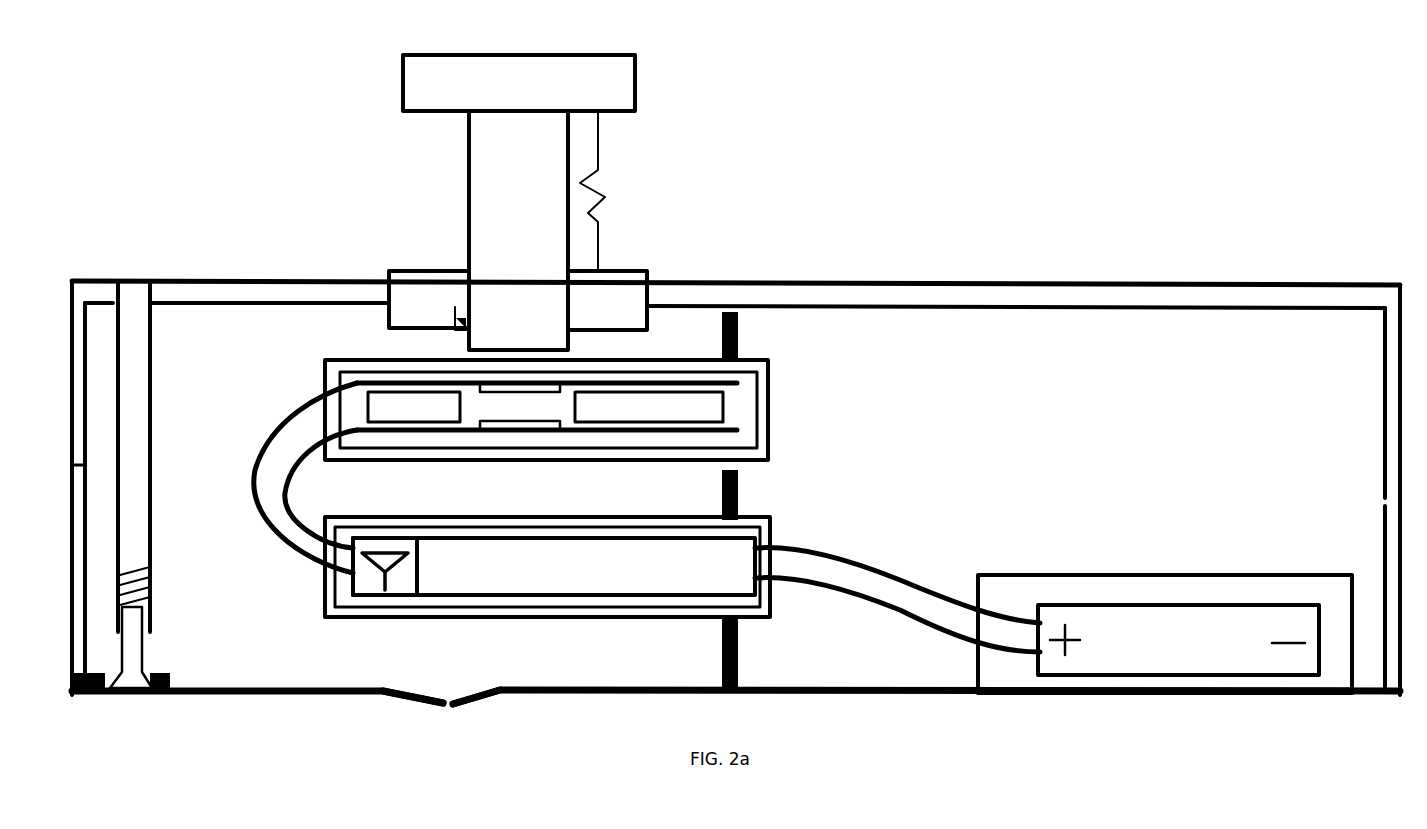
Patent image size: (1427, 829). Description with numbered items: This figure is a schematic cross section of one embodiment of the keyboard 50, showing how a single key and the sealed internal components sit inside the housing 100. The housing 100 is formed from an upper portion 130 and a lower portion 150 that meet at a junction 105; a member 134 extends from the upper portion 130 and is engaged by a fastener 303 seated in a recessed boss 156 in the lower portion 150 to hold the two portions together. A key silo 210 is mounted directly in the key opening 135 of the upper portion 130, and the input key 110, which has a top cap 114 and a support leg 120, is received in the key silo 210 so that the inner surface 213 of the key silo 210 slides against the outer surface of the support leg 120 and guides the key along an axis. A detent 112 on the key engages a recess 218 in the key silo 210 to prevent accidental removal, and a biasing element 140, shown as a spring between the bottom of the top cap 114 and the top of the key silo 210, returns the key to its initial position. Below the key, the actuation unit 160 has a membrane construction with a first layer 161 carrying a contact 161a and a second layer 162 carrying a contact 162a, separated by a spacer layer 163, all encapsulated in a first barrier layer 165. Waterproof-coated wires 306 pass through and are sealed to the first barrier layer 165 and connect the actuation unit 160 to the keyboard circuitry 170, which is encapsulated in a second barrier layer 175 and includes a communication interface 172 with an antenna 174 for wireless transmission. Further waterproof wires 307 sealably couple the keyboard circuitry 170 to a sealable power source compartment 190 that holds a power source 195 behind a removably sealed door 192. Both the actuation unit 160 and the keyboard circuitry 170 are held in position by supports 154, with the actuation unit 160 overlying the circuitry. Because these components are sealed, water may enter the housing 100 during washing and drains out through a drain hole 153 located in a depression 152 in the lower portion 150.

The keyboard 50 is at (1075, 232).
The housing 100 is at (848, 282).
The junction 105 is at (120, 475).
The input key 110 is at (466, 140).
The detent 112 is at (455, 328).
The top cap 114 is at (600, 92).
The support leg 120 is at (507, 165).
The upper portion 130 is at (277, 290).
The member 134 is at (136, 322).
The key opening 135 is at (385, 282).
The biasing element 140 is at (596, 147).
The lower portion 150 is at (330, 696).
The depression 152 is at (428, 706).
The drain hole 153 is at (458, 710).
The supports 154 is at (745, 328).
The recessed boss 156 is at (165, 688).
The actuation unit 160 is at (815, 400).
The first layer 161 is at (395, 425).
The contact 161a is at (515, 392).
The second layer 162 is at (740, 405).
The contact 162a is at (540, 392).
The spacer layer 163 is at (665, 385).
The first barrier layer 165 is at (550, 448).
The keyboard circuitry 170 is at (640, 600).
The communication interface 172 is at (368, 585).
The antenna 174 is at (390, 580).
The second barrier layer 175 is at (478, 605).
The sealable power source compartment 190 is at (1035, 575).
The door 192 is at (1120, 700).
The power source 195 is at (1150, 605).
The key silo 210 is at (635, 288).
The inner surface 213 is at (575, 284).
The recess 218 is at (440, 300).
The fastener 303 is at (142, 660).
The wires 306 is at (315, 418).
The wires 307 is at (885, 568).